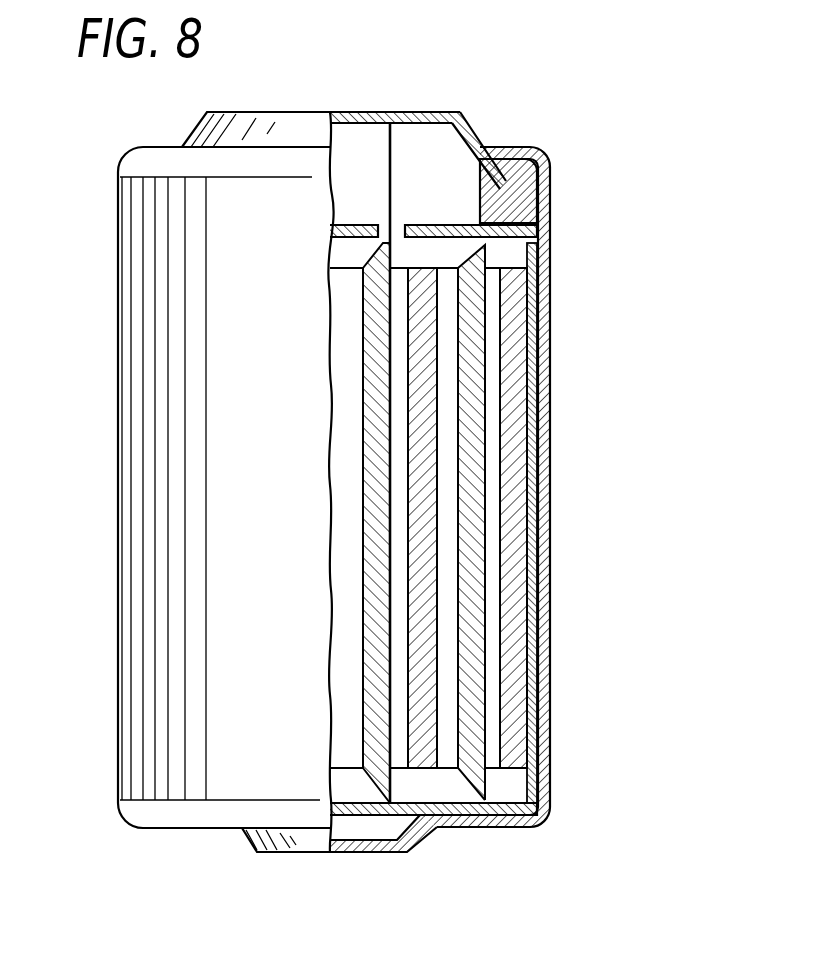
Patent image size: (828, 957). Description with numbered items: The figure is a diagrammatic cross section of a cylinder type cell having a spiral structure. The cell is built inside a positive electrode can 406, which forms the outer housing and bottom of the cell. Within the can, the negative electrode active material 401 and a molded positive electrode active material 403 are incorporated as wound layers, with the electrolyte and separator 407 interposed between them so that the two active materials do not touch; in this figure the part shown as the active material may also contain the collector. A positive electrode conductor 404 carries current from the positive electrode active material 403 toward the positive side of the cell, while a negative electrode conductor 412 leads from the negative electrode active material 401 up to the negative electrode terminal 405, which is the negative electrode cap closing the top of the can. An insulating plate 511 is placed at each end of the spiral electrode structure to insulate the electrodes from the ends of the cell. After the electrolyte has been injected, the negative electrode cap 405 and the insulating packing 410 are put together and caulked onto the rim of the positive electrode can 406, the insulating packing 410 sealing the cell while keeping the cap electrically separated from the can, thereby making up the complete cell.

The negative electrode active material 401 is at (473, 432).
The positive electrode active material 403 is at (517, 695).
The positive electrode conductor 404 is at (532, 602).
The negative electrode terminal 405 is at (413, 112).
The positive electrode can 406 is at (413, 847).
The electrolyte and separator 407 is at (450, 348).
The insulating packing 410 is at (546, 206).
The negative electrode conductor 412 is at (390, 185).
The insulating plate 511 is at (542, 237).